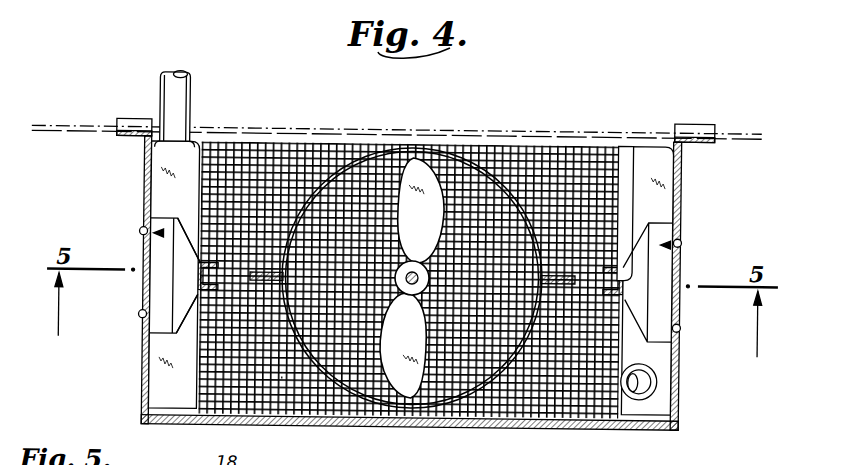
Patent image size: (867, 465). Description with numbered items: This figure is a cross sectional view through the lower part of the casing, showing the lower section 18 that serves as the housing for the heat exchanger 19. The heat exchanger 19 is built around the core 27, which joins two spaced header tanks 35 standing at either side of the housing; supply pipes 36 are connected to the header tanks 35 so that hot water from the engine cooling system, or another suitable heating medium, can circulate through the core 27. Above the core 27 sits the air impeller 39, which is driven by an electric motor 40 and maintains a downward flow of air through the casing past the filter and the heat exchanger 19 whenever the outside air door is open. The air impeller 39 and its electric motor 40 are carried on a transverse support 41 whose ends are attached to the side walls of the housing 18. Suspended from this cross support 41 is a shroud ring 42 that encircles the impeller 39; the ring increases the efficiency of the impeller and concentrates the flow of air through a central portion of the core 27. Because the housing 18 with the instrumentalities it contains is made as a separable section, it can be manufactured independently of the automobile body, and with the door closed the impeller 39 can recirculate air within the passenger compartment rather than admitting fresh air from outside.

The lower section 18 is at (539, 428).
The heat exchanger 19 is at (164, 370).
The core 27 is at (283, 378).
The header tanks 35 is at (162, 193).
The supply pipes 36 is at (182, 105).
The air impeller 39 is at (426, 241).
The electric motor 40 is at (461, 452).
The transverse support 41 is at (196, 286).
The shroud ring 42 is at (374, 401).